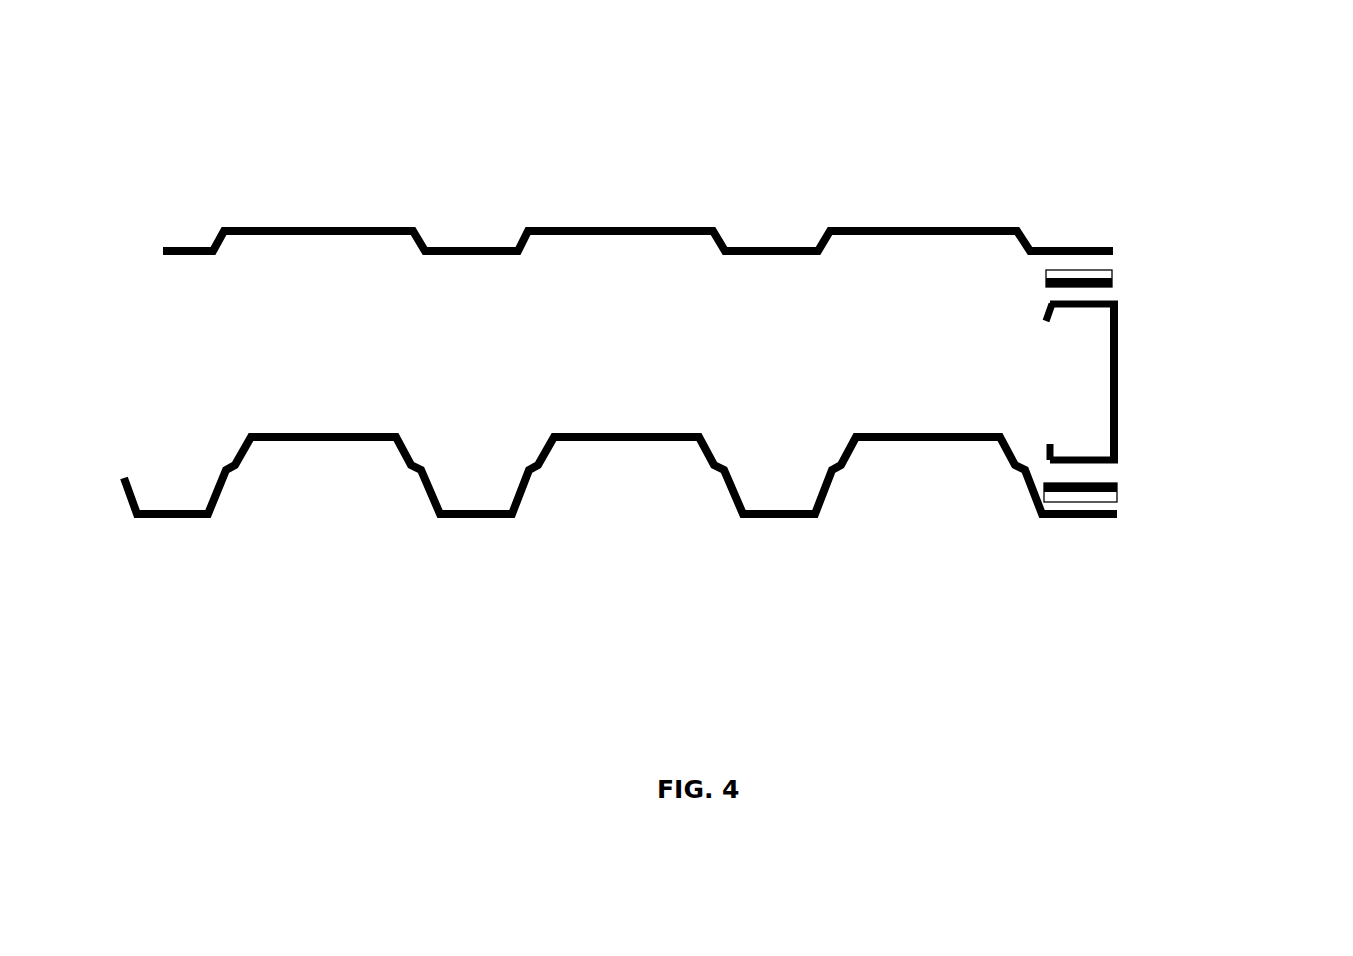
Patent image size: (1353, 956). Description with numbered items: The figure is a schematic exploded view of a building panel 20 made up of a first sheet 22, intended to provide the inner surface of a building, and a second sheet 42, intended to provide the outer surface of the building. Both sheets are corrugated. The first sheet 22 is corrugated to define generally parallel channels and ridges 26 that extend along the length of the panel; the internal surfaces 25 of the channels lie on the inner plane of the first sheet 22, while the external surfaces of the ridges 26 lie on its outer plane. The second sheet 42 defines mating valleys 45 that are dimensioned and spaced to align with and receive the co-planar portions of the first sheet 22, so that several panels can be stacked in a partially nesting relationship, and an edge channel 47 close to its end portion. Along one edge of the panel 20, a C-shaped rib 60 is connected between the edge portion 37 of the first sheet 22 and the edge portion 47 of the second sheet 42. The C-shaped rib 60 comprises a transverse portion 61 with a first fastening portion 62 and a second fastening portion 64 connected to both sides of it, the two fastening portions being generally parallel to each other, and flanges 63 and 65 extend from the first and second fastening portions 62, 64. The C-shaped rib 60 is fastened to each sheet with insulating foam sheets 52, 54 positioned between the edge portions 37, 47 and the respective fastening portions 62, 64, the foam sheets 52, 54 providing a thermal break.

The building panel 20 is at (1012, 124).
The first sheet 22 is at (698, 433).
The internal surfaces of the channels 25 is at (313, 433).
The ridges 26 is at (627, 486).
The edge portion of the first sheet 37 is at (1065, 522).
The second sheet 42 is at (178, 230).
The mating valleys 45 is at (460, 247).
The edge channel of the second sheet 47 is at (1077, 252).
The insulating foam sheet 52 is at (1117, 485).
The insulating foam sheet 54 is at (1112, 278).
The C-shaped rib 60 is at (1118, 365).
The transverse portion 61 is at (1120, 415).
The first fastening portion 62 is at (1087, 455).
The flange 63 is at (1054, 448).
The second fastening portion 64 is at (1090, 306).
The flange 65 is at (1056, 318).